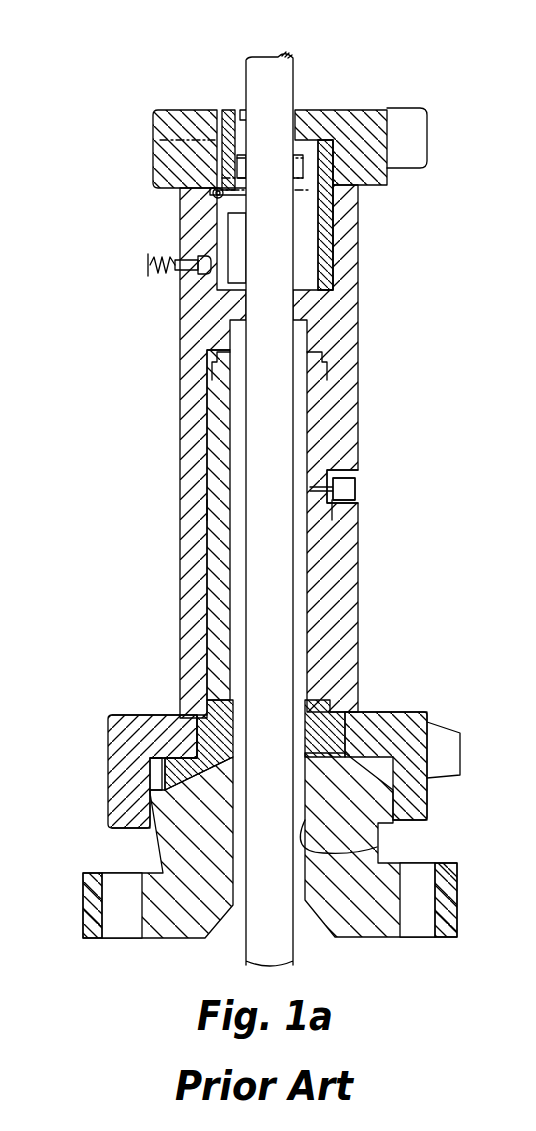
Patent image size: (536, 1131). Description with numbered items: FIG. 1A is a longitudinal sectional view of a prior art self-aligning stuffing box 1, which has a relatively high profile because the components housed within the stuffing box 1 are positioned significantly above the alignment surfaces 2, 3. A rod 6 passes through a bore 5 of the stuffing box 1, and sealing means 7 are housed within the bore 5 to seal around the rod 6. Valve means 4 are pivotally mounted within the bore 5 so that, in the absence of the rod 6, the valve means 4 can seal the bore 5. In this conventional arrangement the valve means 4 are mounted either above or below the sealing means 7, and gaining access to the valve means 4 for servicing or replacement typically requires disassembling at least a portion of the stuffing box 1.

The stuffing box 1 is at (123, 187).
The alignment surface 2 is at (367, 767).
The alignment surface 3 is at (180, 790).
The valve means 4 is at (226, 247).
The bore 5 is at (377, 847).
The rod 6 is at (280, 436).
The sealing means 7 is at (330, 313).